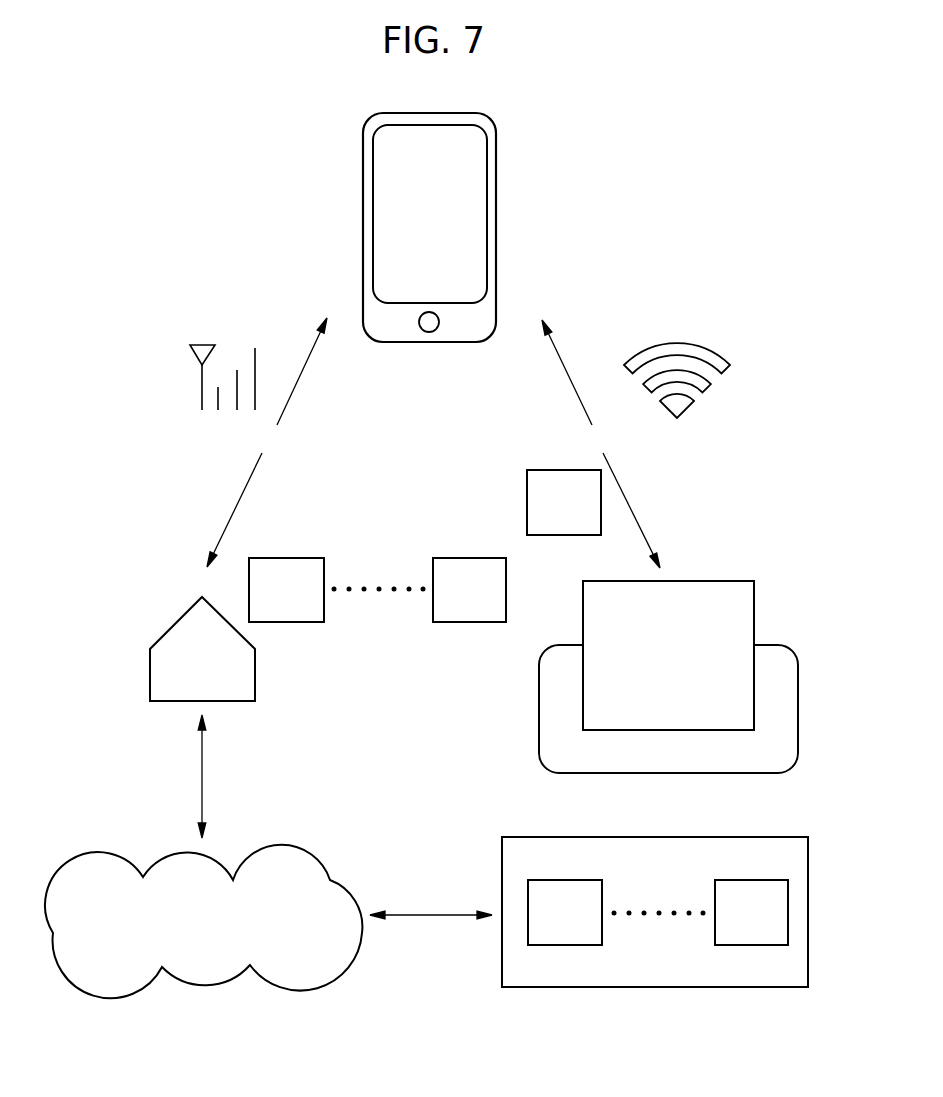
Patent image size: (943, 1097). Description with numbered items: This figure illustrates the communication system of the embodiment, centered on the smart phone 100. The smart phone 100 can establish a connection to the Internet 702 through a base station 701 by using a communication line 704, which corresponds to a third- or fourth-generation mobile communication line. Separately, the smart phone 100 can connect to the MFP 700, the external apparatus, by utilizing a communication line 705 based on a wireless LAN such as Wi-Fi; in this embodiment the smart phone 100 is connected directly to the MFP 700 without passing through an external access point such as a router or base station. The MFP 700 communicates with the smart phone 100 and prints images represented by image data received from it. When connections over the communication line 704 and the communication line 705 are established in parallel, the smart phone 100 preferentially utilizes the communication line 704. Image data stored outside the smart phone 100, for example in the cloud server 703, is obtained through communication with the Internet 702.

The smart phone 100 is at (496, 207).
The MFP 700 is at (722, 581).
The base station 701 is at (255, 672).
The Internet 702 is at (312, 855).
The cloud server 703 is at (690, 837).
The communication line 704 is at (258, 442).
The communication line 705 is at (628, 444).